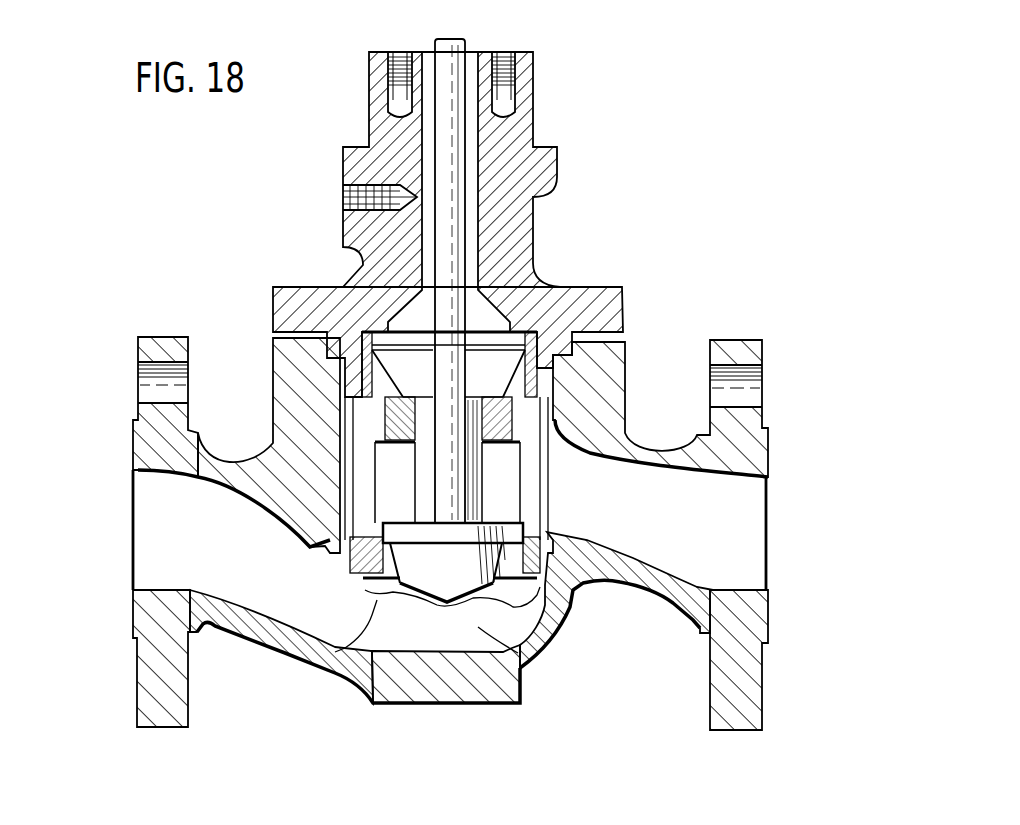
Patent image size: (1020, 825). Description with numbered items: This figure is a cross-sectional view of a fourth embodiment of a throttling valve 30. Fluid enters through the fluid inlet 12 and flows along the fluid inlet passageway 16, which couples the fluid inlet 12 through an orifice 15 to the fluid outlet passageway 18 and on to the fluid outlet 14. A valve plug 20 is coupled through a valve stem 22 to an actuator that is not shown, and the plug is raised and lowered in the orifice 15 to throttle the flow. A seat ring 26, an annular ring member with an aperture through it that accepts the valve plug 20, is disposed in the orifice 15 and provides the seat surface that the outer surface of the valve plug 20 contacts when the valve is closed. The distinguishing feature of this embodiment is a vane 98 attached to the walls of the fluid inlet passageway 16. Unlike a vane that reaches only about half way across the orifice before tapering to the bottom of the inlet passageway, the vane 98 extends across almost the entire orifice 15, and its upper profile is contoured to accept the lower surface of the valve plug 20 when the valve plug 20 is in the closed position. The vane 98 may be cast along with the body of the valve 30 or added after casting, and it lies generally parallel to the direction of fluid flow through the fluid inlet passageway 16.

The throttling valve 30 is at (628, 87).
The valve stem 22 is at (544, 272).
The fluid inlet 12 is at (127, 486).
The fluid outlet 14 is at (772, 482).
The fluid inlet passageway 16 is at (157, 560).
The fluid outlet passageway 18 is at (747, 570).
The orifice 15 is at (366, 589).
The valve plug 20 is at (463, 578).
The seat ring 26 is at (568, 605).
The vane 98 is at (522, 677).